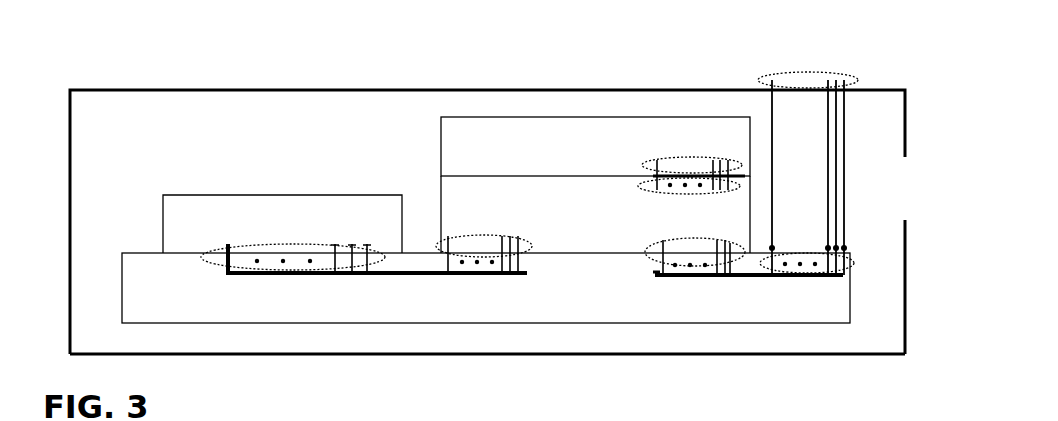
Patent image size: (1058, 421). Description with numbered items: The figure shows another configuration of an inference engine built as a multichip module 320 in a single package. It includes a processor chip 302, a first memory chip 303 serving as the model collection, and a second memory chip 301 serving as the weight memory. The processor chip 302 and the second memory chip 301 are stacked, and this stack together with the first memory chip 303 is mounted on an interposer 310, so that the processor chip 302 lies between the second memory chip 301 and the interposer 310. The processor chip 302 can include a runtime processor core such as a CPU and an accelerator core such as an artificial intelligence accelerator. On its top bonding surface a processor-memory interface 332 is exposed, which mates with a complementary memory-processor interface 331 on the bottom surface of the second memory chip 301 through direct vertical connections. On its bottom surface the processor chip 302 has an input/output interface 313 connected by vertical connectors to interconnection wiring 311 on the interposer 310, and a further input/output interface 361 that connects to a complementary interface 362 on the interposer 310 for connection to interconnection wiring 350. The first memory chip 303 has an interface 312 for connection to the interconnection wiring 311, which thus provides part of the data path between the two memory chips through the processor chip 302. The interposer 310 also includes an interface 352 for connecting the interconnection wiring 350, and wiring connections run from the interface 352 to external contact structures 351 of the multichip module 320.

The second memory chip 301 is at (738, 143).
The processor chip 302 is at (735, 222).
The first memory chip 303 is at (187, 227).
The interposer 310 is at (767, 315).
The interconnection wiring 311 is at (400, 277).
The interface 312 is at (292, 276).
The input/output interface 313 is at (470, 235).
The multichip module 320 is at (725, 356).
The memory-processor interface 331 is at (640, 165).
The processor-memory interface 332 is at (745, 185).
The interconnection wiring 350 is at (763, 278).
The external contact structures 351 is at (808, 78).
The interface 352 is at (855, 262).
The input/output interface 361 is at (650, 243).
The complementary interface 362 is at (653, 270).